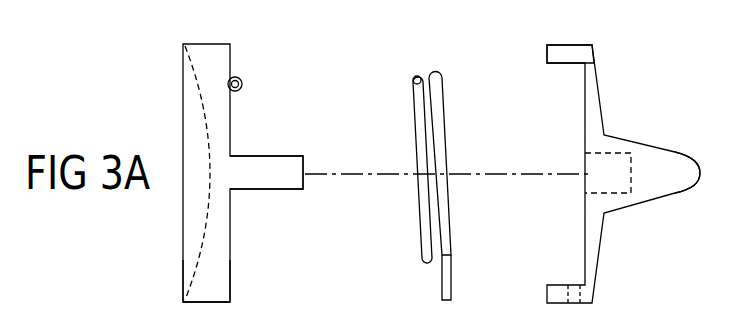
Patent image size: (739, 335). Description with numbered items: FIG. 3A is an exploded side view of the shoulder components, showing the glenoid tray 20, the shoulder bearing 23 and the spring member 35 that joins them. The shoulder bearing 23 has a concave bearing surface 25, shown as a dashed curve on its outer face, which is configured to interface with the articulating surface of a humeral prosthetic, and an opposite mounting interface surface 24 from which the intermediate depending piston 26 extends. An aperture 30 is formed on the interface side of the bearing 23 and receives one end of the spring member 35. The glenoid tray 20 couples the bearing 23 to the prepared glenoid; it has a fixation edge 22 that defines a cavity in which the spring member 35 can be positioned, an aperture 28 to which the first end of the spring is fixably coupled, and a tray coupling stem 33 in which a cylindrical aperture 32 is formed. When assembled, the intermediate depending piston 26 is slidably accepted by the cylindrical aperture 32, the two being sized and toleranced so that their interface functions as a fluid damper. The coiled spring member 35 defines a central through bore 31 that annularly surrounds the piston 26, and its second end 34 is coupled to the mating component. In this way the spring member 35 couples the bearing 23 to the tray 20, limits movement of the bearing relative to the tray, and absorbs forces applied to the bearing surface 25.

The glenoid tray 20 is at (593, 102).
The fixation edge 22 is at (566, 52).
The shoulder bearing 23 is at (218, 55).
The mounting interface surface 24 is at (232, 275).
The concave bearing surface 25 is at (195, 100).
The intermediate depending piston 26 is at (263, 178).
The aperture 28 is at (575, 303).
The aperture 30 is at (241, 89).
The central through bore 31 is at (460, 156).
The cylindrical aperture 32 is at (602, 173).
The tray coupling stem 33 is at (652, 188).
The second end 34 is at (414, 77).
The spring member 35 is at (445, 300).